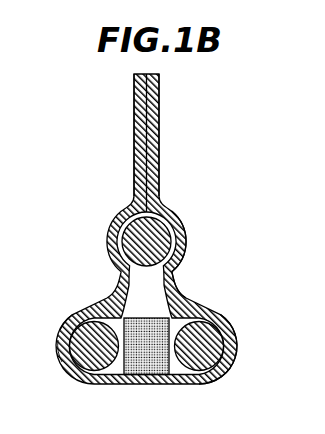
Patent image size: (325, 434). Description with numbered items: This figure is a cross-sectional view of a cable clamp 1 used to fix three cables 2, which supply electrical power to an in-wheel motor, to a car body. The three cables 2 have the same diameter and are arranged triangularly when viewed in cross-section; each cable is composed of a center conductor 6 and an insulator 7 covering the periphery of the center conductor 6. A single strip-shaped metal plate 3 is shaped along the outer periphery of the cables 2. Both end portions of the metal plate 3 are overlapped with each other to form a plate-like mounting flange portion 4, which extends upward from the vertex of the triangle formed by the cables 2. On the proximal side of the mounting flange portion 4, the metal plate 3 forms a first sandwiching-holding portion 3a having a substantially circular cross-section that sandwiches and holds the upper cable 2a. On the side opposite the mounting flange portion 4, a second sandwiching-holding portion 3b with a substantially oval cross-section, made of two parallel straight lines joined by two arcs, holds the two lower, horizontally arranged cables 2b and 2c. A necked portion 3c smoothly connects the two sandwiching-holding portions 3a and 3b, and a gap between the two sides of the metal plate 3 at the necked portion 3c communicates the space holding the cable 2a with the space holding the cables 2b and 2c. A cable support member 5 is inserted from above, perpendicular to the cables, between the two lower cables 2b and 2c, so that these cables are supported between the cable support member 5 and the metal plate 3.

The cable clamp 1 is at (39, 72).
The cables 2 is at (116, 217).
The cable 2a is at (108, 242).
The cable 2b is at (91, 384).
The cable 2c is at (199, 384).
The metal plate 3 is at (178, 211).
The first sandwiching-holding portion 3a is at (186, 241).
The second sandwiching-holding portion 3b is at (237, 343).
The necked portion 3c is at (174, 284).
The mounting flange portion 4 is at (159, 115).
The cable support member 5 is at (145, 374).
The center conductor 6 is at (66, 335).
The insulator 7 is at (59, 363).